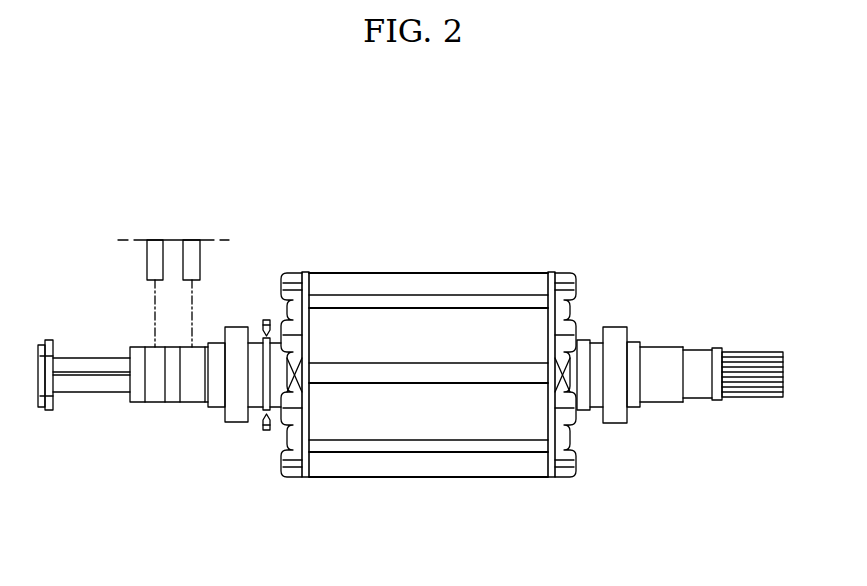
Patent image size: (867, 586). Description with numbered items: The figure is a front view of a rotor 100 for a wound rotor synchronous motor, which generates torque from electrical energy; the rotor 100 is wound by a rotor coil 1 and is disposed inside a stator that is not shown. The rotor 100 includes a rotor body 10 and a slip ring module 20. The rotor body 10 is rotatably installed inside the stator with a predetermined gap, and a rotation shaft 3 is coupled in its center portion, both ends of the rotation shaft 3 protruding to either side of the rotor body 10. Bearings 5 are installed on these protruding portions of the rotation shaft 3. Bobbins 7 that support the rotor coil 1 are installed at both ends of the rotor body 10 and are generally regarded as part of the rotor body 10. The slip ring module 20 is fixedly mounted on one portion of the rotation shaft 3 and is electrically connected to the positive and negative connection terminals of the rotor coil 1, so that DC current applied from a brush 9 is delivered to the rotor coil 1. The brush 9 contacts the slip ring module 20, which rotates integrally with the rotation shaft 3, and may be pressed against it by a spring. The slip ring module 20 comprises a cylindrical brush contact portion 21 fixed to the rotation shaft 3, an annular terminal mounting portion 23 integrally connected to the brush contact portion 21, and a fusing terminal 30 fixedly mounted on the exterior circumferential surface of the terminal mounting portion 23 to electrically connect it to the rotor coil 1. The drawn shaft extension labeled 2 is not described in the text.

The rotor 100 is at (436, 151).
The rotor body 10 is at (432, 492).
The rotor coil 1 is at (276, 298).
The bobbin 7 is at (318, 268).
The rotation shaft 3 is at (92, 386).
The slip ring module 20 is at (205, 424).
The brush contact portion 21 is at (192, 396).
The bearing 5 is at (239, 425).
The terminal mounting portion 23 is at (267, 382).
The fusing terminal 30 is at (266, 316).
The brush 9 is at (175, 237).
The output shaft 2 is at (680, 375).